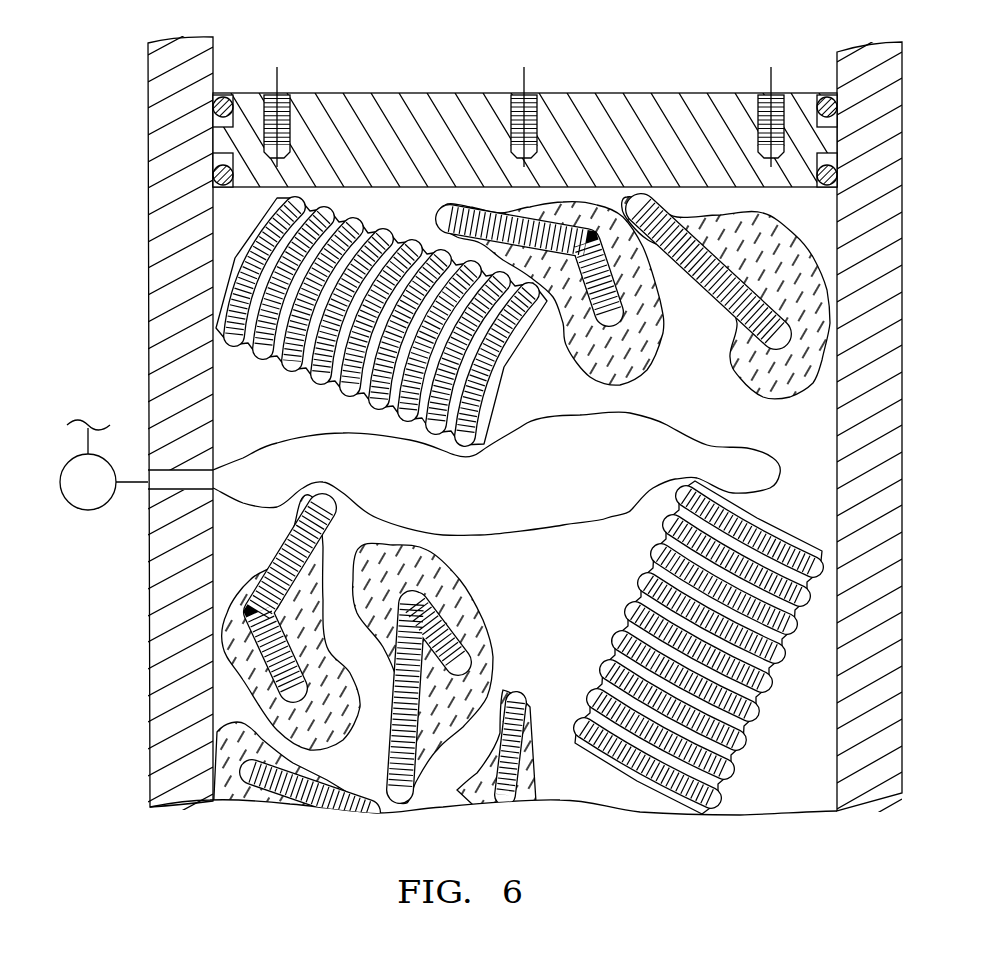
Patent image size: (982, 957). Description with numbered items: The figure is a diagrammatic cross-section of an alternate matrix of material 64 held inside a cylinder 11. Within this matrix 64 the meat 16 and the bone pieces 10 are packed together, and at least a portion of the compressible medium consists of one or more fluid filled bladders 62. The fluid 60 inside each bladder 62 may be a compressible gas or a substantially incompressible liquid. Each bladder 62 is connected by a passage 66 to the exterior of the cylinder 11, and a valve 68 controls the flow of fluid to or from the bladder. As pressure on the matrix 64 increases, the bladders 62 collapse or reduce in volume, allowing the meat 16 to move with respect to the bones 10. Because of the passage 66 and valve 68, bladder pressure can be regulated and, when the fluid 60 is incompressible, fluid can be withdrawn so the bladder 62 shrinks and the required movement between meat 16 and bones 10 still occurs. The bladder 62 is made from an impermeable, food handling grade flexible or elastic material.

The bones 10 is at (665, 205).
The cylinder 11 is at (150, 768).
The meat 16 is at (223, 728).
The fluid 60 is at (578, 489).
The fluid filled bladder 62 is at (575, 525).
The matrix of material 64 is at (238, 568).
The passage 66 is at (187, 482).
The valve 68 is at (80, 508).